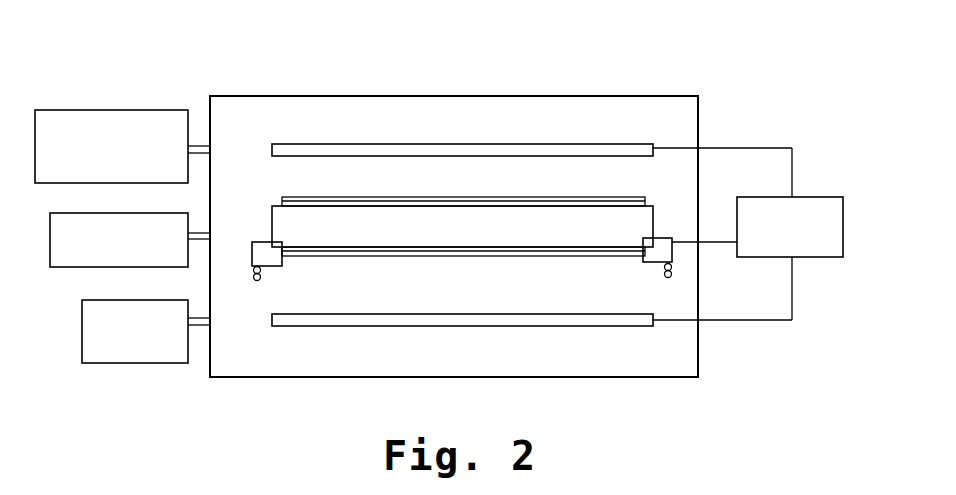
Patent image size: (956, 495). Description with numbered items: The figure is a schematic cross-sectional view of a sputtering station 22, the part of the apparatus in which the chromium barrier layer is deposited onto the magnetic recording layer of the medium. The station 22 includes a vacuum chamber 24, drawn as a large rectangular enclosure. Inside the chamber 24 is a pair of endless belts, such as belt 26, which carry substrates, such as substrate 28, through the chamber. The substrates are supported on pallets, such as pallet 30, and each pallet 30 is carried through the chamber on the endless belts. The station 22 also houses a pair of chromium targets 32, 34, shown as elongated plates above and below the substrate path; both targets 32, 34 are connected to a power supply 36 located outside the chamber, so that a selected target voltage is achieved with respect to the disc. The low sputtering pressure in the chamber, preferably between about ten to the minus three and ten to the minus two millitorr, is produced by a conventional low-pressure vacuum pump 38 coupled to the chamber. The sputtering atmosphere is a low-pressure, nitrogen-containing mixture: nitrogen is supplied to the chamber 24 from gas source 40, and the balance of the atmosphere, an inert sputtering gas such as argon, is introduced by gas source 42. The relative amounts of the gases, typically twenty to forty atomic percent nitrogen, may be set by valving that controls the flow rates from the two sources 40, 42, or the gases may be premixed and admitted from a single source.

The sputtering station 22 is at (678, 63).
The vacuum chamber 24 is at (352, 112).
The endless belt 26 is at (262, 276).
The substrate 28 is at (462, 234).
The pallet 30 is at (655, 263).
The chromium target 32 is at (440, 146).
The chromium target 34 is at (396, 320).
The power supply 36 is at (747, 207).
The low-pressure vacuum pump 38 is at (88, 300).
The gas source 40 is at (115, 109).
The gas source 42 is at (75, 212).